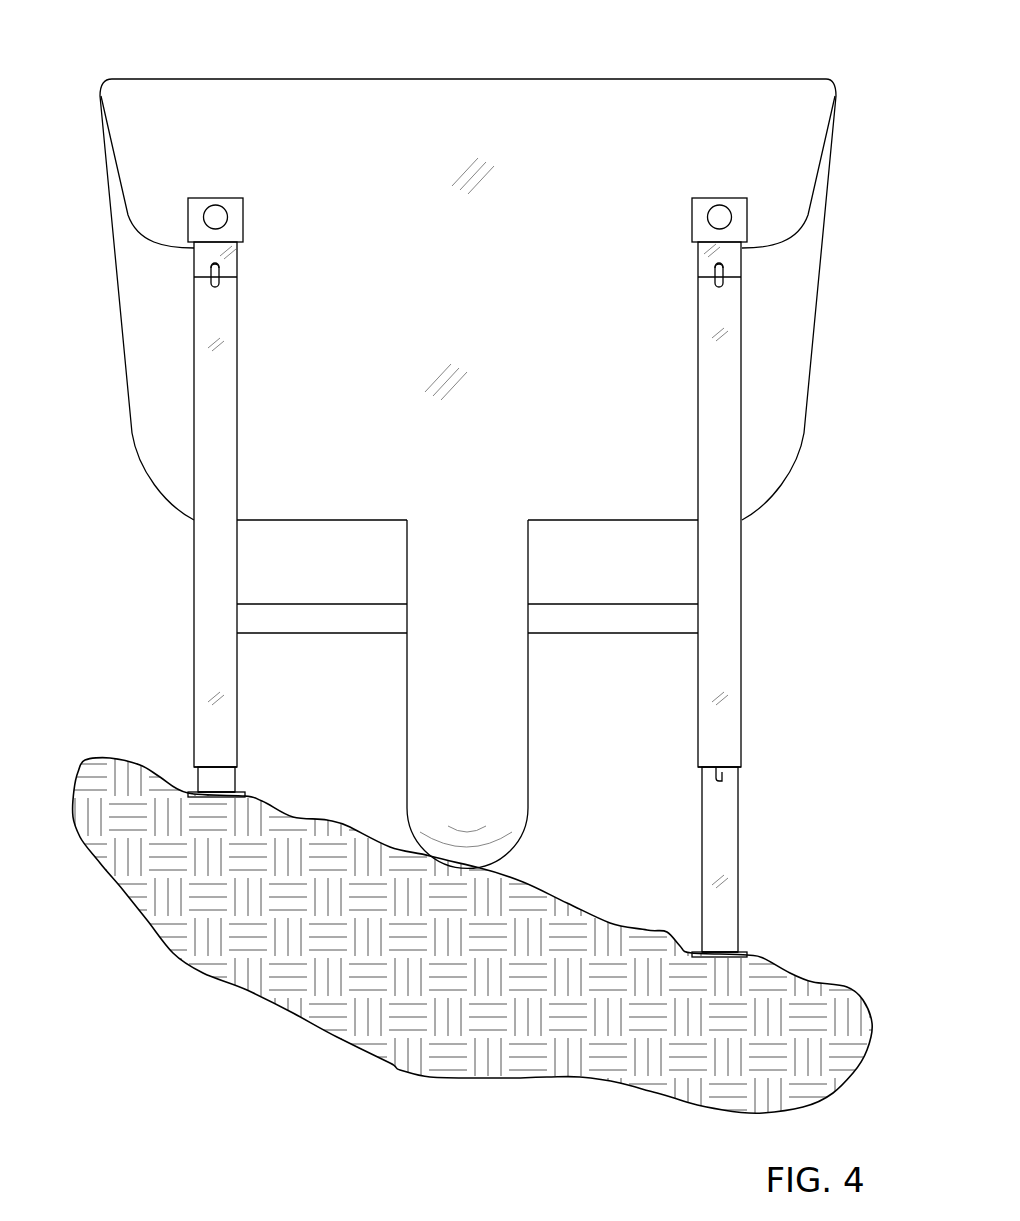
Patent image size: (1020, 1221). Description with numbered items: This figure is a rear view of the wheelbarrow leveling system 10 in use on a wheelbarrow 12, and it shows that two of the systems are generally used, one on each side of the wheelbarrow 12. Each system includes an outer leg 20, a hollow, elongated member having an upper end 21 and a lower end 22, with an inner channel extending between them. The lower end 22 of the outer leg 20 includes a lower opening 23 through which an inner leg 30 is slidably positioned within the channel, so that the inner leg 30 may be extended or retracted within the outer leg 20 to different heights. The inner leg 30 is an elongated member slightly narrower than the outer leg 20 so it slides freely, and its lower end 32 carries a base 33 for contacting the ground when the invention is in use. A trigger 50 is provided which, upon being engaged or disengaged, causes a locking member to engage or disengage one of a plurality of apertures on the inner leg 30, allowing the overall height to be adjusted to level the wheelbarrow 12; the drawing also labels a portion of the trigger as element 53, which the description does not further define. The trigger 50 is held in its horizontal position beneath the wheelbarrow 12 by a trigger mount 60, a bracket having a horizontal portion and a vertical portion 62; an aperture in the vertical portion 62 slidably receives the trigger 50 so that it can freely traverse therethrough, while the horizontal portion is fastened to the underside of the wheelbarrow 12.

The wheelbarrow leveling system 10 is at (244, 403).
The wheelbarrow 12 is at (408, 138).
The outer leg 20 is at (194, 558).
The upper end 21 is at (727, 297).
The lower end 22 is at (218, 757).
The lower opening 23 is at (717, 778).
The inner leg 30 is at (194, 778).
The lower end 32 is at (220, 783).
The base 33 is at (240, 790).
The trigger 50 is at (210, 275).
The pin head 53 is at (217, 286).
The trigger mount 60 is at (194, 268).
The vertical portion 62 is at (232, 267).